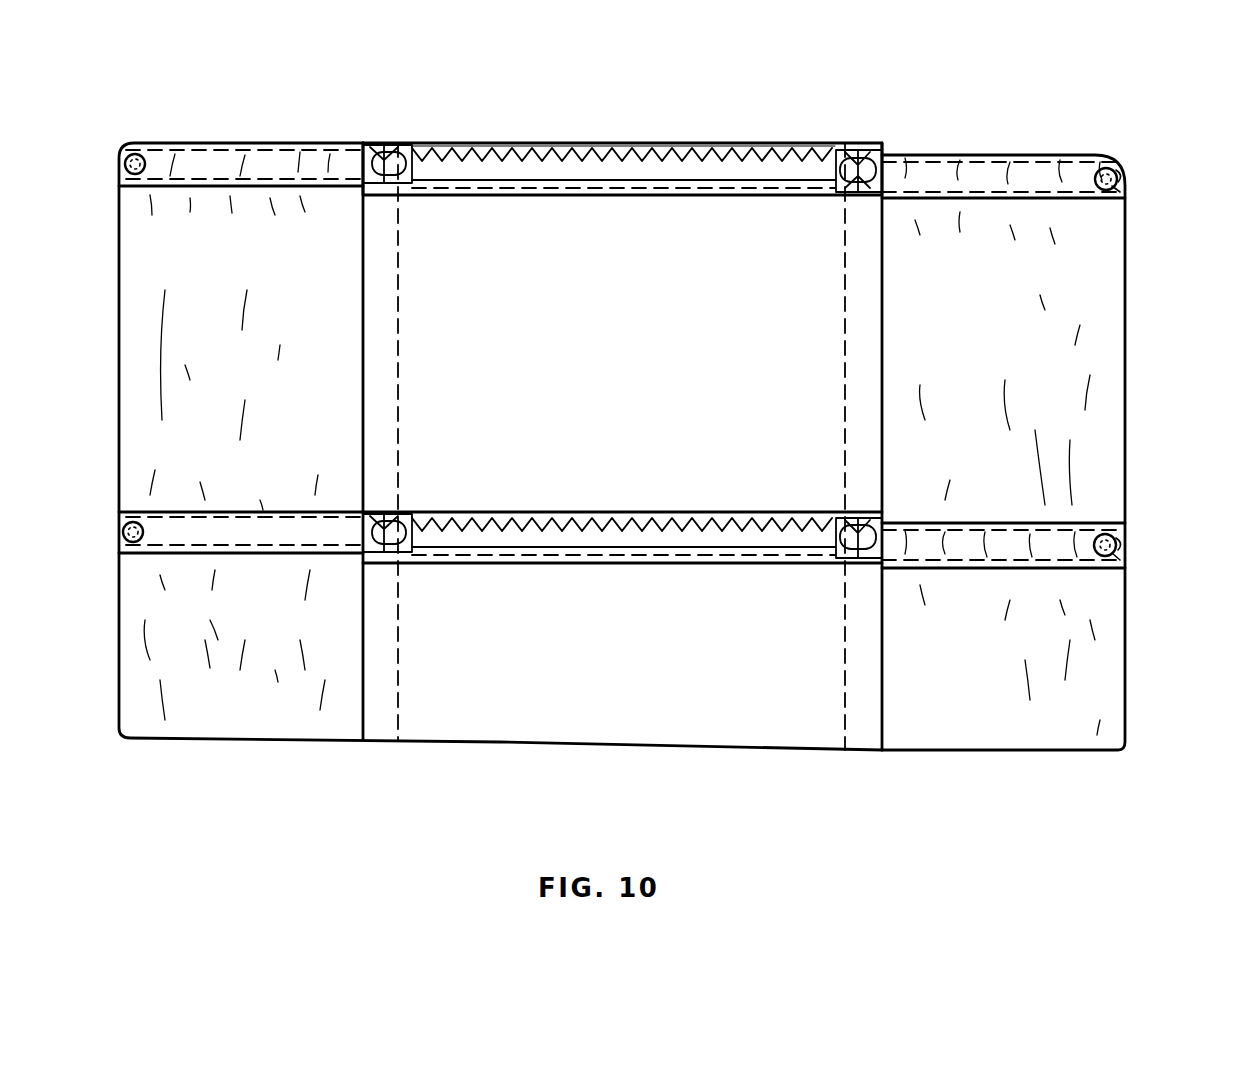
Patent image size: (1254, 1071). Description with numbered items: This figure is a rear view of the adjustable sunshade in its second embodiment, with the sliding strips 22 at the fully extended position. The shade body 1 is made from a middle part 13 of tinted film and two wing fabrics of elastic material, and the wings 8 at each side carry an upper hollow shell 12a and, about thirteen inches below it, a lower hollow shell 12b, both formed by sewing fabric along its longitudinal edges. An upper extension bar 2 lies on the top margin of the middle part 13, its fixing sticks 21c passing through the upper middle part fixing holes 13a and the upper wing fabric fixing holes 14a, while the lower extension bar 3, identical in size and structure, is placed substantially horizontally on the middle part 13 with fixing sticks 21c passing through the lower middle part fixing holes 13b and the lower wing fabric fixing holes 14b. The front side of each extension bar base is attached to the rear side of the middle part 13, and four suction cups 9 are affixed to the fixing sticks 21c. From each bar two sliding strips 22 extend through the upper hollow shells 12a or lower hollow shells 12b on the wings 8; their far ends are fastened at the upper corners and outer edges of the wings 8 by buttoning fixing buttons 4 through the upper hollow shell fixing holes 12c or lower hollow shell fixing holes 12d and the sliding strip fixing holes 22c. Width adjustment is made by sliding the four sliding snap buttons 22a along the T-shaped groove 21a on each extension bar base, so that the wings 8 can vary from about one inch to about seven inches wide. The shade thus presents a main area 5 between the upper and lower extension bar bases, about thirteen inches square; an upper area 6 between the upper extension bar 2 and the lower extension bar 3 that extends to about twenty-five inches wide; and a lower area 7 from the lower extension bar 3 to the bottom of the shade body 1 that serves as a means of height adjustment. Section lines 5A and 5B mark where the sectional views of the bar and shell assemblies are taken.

The shade body 1 is at (552, 418).
The upper extension bar 2 is at (453, 140).
The lower extension bar 3 is at (445, 562).
The fixing buttons 4 is at (1120, 162).
The main area 5 is at (772, 342).
The upper area 6 is at (748, 378).
The lower area 7 is at (782, 712).
The wings 8 is at (1043, 442).
The suction cups 9 is at (841, 165).
The upper hollow shells 12a is at (1046, 160).
The lower hollow shells 12b is at (1090, 568).
The upper hollow shell fixing holes 12c is at (1120, 175).
The lower hollow shell fixing holes 12d is at (1114, 548).
The middle part 13 is at (552, 308).
The upper middle part fixing holes 13a is at (855, 197).
The lower middle part fixing holes 13b is at (855, 562).
The upper wing fabric fixing holes 14a is at (860, 200).
The lower wing fabric fixing holes 14b is at (860, 565).
The T-shaped groove 21a is at (567, 170).
The fixing sticks 21c is at (863, 203).
The sliding strips 22 is at (933, 180).
The sliding snap buttons 22a is at (790, 142).
The sliding strip fixing holes 22c is at (1122, 190).
The section line 5A is at (862, 88).
The section line 5B is at (1112, 95).